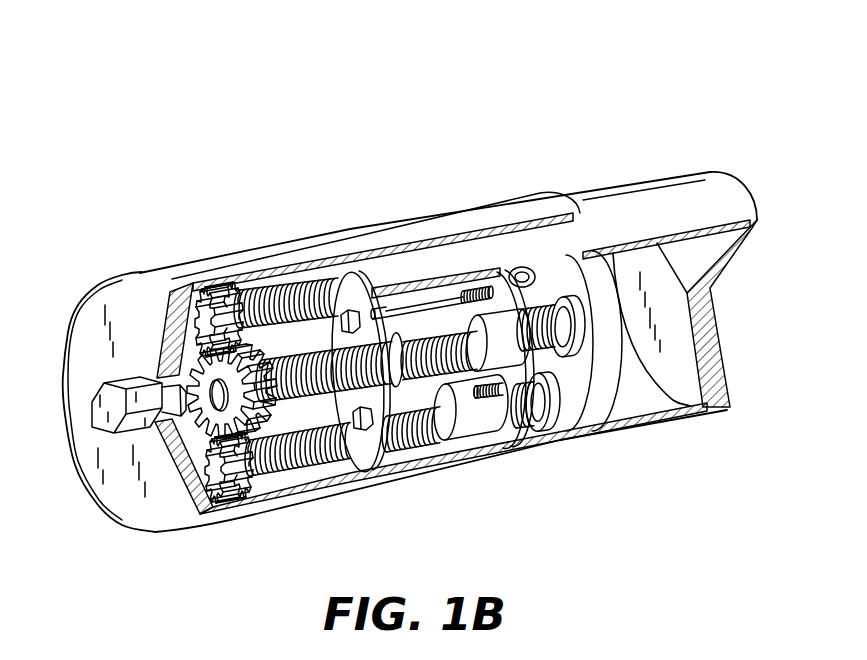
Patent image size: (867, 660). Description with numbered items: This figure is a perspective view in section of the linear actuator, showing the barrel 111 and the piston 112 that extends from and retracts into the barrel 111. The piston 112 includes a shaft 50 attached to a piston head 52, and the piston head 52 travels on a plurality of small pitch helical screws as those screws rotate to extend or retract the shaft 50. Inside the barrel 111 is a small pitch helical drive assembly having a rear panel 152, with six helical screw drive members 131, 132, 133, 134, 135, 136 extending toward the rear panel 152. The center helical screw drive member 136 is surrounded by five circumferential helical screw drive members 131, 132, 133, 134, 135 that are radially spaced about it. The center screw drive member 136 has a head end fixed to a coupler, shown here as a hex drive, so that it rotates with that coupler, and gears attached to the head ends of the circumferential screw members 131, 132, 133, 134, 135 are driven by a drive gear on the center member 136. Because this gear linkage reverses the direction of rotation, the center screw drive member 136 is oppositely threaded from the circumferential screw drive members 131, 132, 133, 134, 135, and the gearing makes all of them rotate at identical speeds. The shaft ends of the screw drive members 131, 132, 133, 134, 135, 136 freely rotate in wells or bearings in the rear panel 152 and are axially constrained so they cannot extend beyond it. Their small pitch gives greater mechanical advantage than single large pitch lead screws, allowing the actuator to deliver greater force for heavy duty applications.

The piston 112 is at (647, 115).
The barrel 111 is at (473, 178).
The shaft 50 is at (578, 184).
The piston head 52 is at (503, 453).
The rear panel 152 is at (597, 380).
The helical screw drive member 131 is at (283, 470).
The helical screw drive member 132 is at (338, 470).
The helical screw drive member 133 is at (273, 288).
The helical screw drive member 134 is at (247, 303).
The helical screw drive member 135 is at (321, 455).
The center helical screw drive member 136 is at (307, 357).